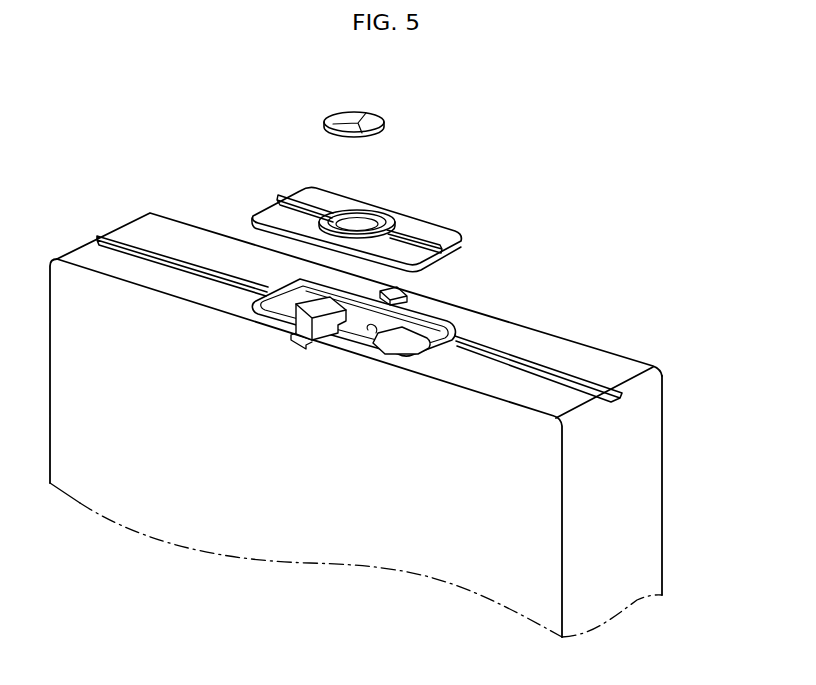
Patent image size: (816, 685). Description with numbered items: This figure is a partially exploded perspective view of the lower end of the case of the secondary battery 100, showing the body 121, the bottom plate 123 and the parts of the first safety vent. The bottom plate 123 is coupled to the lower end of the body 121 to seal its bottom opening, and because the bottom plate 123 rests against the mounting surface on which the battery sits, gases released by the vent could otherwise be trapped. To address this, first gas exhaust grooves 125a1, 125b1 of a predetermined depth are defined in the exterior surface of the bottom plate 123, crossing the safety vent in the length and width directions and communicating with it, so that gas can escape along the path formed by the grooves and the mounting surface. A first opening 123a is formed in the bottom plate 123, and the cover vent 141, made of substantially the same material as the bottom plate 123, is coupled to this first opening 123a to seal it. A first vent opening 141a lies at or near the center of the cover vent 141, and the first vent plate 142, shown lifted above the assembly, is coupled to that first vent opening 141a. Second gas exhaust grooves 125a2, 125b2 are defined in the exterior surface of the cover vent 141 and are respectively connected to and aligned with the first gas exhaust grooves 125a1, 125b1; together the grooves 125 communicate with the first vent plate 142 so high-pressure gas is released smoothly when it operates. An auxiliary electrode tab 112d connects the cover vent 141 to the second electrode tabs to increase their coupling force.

The secondary battery 100 is at (347, 330).
The auxiliary electrode tab 112d is at (412, 342).
The body 121 is at (650, 468).
The bottom plate 123 is at (568, 354).
The first opening 123a is at (368, 328).
The insulating member 125 is at (332, 237).
The first gas exhaust groove 125a1 is at (116, 251).
The second gas exhaust groove 125a2 is at (282, 197).
The first gas exhaust groove 125b1 is at (296, 276).
The second gas exhaust groove 125b2 is at (307, 345).
The cover vent 141 is at (338, 210).
The first vent opening 141a is at (354, 230).
The first vent plate 142 is at (353, 115).